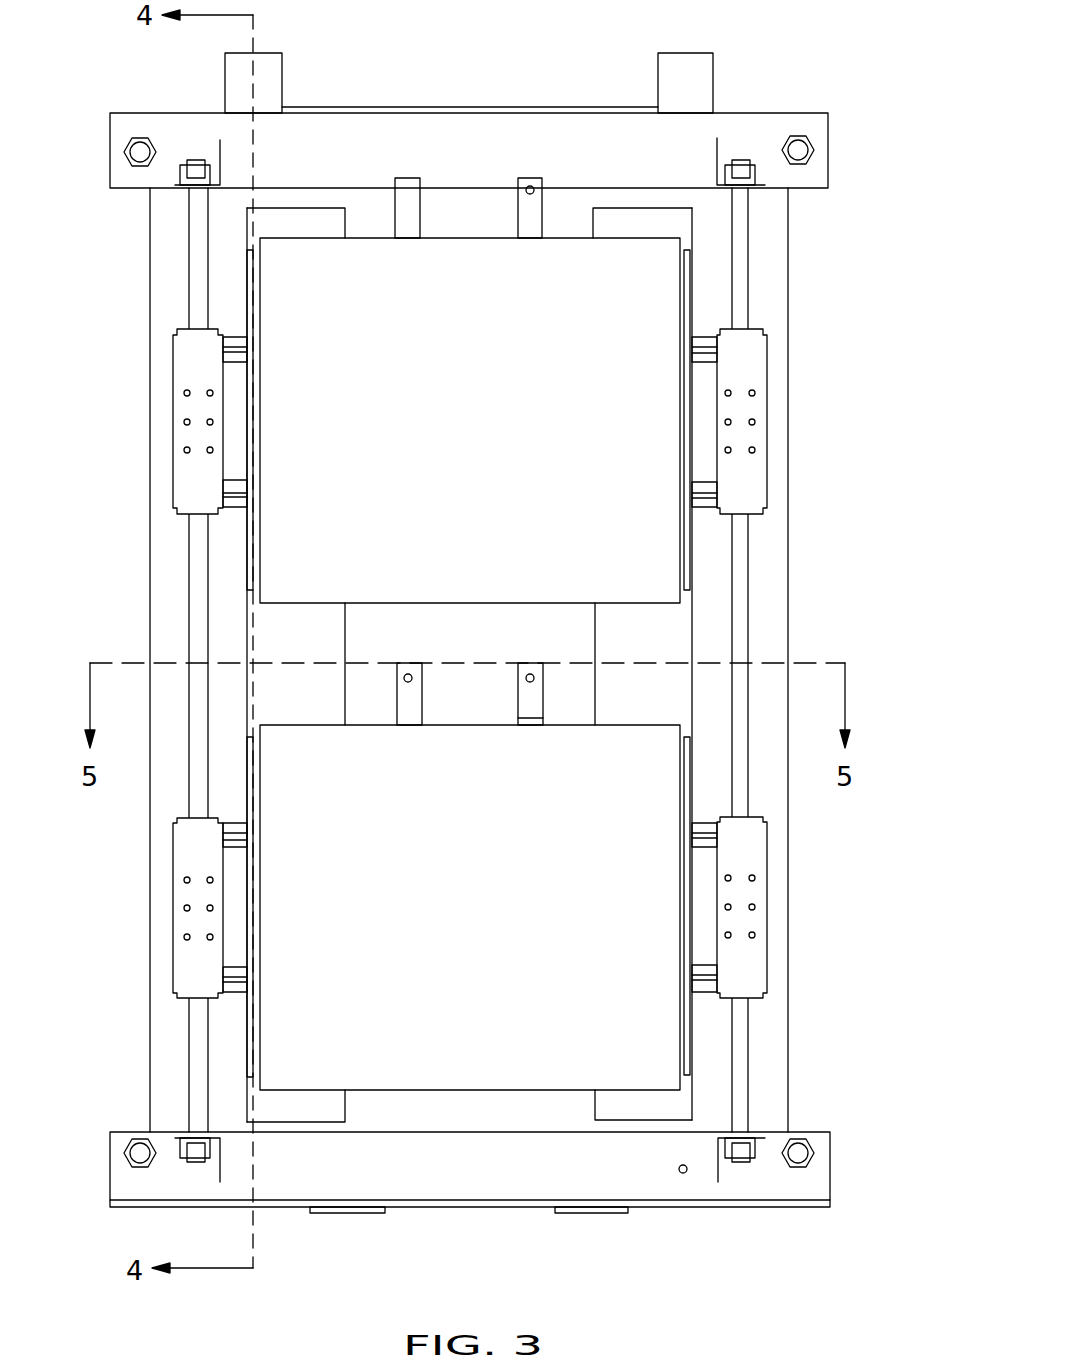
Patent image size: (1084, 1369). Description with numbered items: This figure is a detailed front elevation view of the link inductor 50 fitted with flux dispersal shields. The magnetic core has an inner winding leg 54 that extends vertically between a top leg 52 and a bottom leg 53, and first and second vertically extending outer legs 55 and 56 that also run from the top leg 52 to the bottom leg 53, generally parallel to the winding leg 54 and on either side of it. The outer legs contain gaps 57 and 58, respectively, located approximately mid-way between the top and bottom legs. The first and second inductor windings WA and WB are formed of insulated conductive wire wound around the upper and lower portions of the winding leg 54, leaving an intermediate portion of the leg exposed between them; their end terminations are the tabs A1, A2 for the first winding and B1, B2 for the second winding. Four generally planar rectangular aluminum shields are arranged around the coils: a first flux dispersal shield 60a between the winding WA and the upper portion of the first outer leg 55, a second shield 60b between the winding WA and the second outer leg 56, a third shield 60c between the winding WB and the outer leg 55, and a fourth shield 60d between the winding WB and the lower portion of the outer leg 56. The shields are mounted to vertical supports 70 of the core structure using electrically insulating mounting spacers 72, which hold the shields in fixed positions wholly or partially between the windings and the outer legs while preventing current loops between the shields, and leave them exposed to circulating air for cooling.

The link inductor 50 is at (874, 49).
The top leg 52 is at (300, 200).
The bottom leg 53 is at (635, 1127).
The inner winding leg 54 is at (597, 230).
The first outer leg 55 is at (150, 462).
The second outer leg 56 is at (788, 297).
The gap 57 is at (135, 660).
The gap 58 is at (808, 659).
The first flux dispersal shield 60a is at (247, 277).
The second flux dispersal shield 60b is at (692, 532).
The third flux dispersal shield 60c is at (247, 1037).
The fourth flux dispersal shield 60d is at (692, 1012).
The vertical supports 70 is at (750, 240).
The mounting spacers 72 is at (228, 355).
The tab A1 is at (420, 205).
The tab A2 is at (518, 183).
The tab B1 is at (422, 685).
The tab B2 is at (518, 710).
The first inductor winding WA is at (490, 435).
The second inductor winding WB is at (490, 923).